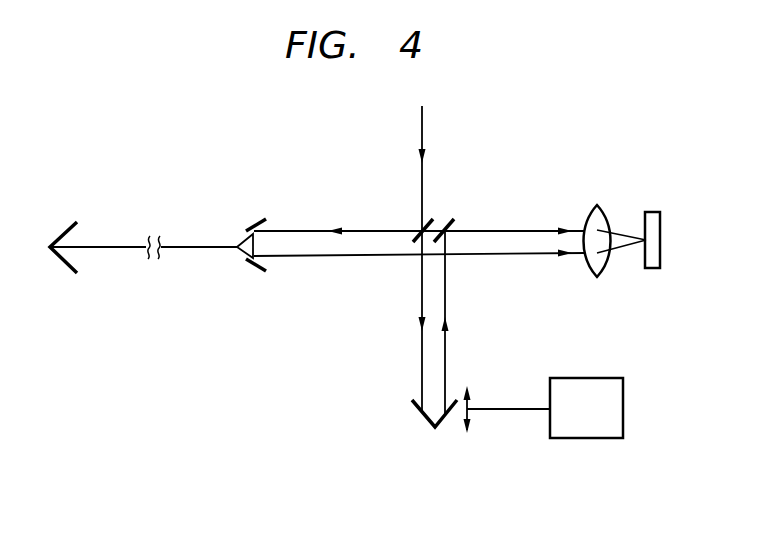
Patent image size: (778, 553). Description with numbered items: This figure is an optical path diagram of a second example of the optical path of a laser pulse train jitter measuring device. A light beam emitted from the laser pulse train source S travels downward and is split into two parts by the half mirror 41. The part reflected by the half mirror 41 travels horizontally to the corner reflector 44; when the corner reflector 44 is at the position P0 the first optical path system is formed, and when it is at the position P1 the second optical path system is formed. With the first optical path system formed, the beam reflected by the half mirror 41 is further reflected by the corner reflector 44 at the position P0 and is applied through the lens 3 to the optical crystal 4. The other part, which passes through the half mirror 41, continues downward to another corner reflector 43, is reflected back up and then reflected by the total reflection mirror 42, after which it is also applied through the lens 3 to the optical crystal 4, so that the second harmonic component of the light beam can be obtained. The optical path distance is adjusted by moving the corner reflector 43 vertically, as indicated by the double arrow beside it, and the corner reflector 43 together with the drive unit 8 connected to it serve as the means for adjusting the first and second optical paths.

The laser pulse train source S is at (420, 156).
The half mirror 41 is at (425, 219).
The total reflection mirror 42 is at (449, 216).
The corner reflector 43 is at (413, 405).
The corner reflector 44 is at (250, 226).
The lens 3 is at (600, 206).
The optical crystal 4 is at (650, 211).
The drive unit 8 is at (612, 377).
The position P0 is at (252, 266).
The position P1 is at (68, 275).